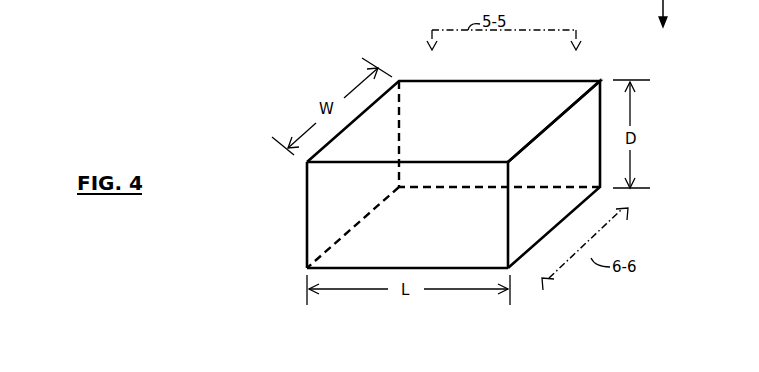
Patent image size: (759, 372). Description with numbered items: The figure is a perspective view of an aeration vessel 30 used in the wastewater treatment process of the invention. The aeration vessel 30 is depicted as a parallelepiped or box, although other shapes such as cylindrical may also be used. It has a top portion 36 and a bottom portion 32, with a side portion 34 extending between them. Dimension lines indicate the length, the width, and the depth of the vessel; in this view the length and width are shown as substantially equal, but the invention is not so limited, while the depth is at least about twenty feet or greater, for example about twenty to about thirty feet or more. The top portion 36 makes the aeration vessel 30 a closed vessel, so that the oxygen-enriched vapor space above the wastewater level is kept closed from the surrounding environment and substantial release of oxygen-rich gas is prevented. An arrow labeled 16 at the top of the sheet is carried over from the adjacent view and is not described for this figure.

The absorbent member 16 is at (665, 2).
The aeration vessel 30 is at (306, 269).
The bottom portion 32 is at (413, 250).
The side portion 34 is at (566, 142).
The top portion 36 is at (413, 130).